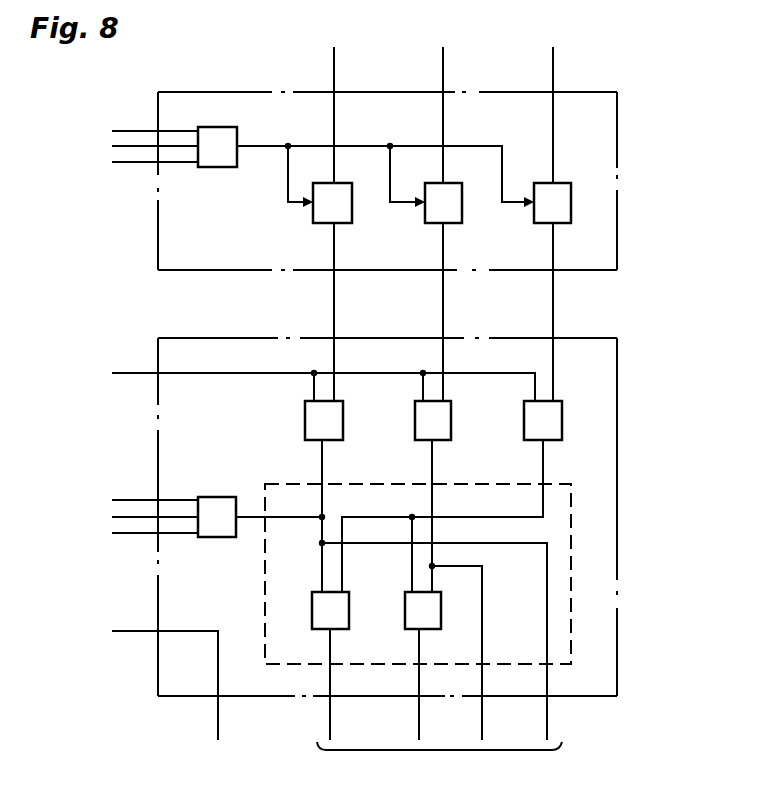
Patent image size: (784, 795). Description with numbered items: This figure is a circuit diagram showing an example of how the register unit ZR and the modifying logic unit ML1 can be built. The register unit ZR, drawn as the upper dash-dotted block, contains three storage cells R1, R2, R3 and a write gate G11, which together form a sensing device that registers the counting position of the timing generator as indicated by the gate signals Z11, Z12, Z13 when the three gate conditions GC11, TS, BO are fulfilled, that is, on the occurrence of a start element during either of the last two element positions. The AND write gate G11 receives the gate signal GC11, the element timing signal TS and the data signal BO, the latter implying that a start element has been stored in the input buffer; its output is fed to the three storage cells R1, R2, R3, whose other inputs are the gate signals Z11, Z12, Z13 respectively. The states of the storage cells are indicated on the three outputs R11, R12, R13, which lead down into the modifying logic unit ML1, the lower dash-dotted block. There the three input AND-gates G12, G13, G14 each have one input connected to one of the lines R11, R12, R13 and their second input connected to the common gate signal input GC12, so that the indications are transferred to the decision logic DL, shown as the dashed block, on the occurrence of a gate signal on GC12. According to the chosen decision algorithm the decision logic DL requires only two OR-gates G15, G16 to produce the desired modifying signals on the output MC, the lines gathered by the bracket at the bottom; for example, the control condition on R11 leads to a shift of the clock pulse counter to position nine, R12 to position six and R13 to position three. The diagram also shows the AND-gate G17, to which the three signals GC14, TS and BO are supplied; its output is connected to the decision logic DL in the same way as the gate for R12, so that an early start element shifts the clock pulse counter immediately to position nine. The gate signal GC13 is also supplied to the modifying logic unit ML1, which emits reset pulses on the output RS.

The register unit ZR is at (617, 138).
The modifying logic unit ML1 is at (617, 365).
The decision logic DL is at (278, 484).
The gate signal Z11 is at (327, 210).
The gate signal Z12 is at (440, 210).
The gate signal Z13 is at (550, 210).
The gate signal GC11 is at (122, 130).
The gate signal GC12 is at (291, 382).
The gate signal GC13 is at (132, 679).
The gate signal GC14 is at (122, 500).
The element timing signal TS is at (122, 331).
The data signal BO is at (122, 348).
The write gate G11 is at (211, 169).
The AND-gate G12 is at (305, 416).
The AND-gate G13 is at (415, 416).
The AND-gate G14 is at (524, 416).
The OR-gate G15 is at (312, 599).
The OR-gate G16 is at (405, 599).
The AND-gate G17 is at (211, 539).
The storage cell R1 is at (332, 203).
The storage cell R2 is at (443, 203).
The storage cell R3 is at (552, 203).
The output R11 is at (334, 300).
The output R12 is at (443, 300).
The output R13 is at (553, 300).
The output RS is at (211, 733).
The output MC is at (439, 759).